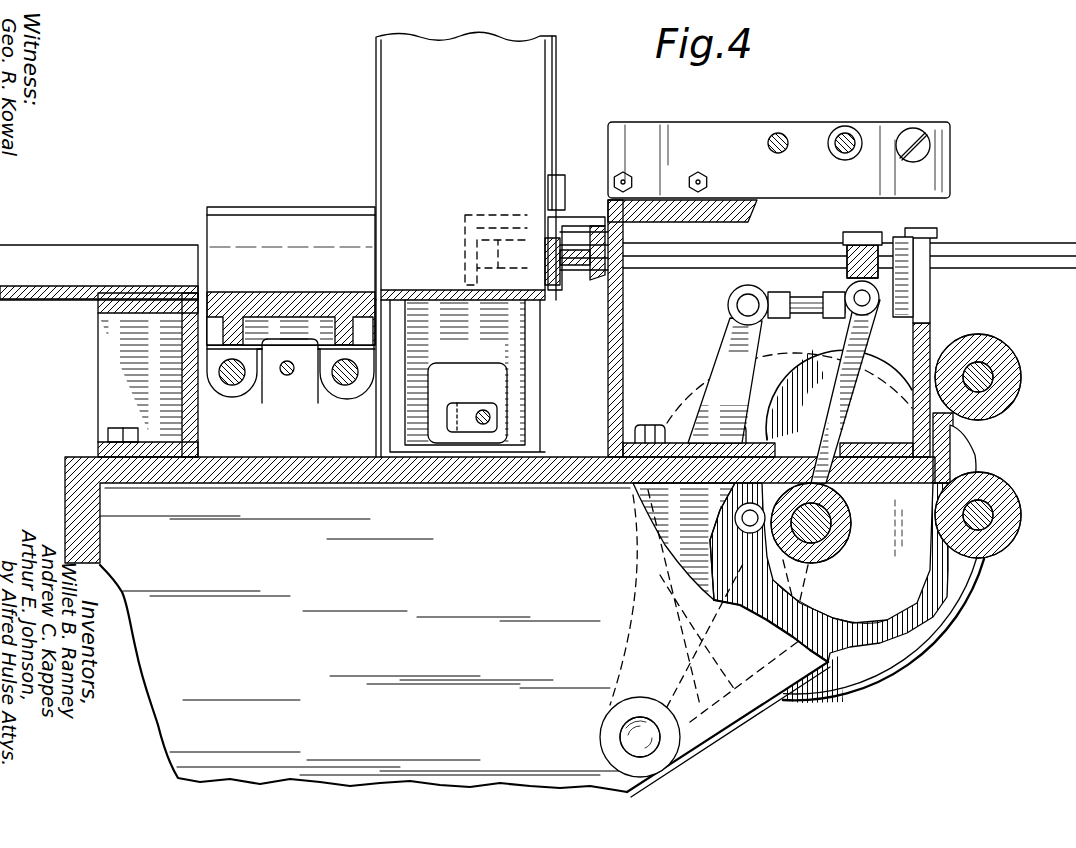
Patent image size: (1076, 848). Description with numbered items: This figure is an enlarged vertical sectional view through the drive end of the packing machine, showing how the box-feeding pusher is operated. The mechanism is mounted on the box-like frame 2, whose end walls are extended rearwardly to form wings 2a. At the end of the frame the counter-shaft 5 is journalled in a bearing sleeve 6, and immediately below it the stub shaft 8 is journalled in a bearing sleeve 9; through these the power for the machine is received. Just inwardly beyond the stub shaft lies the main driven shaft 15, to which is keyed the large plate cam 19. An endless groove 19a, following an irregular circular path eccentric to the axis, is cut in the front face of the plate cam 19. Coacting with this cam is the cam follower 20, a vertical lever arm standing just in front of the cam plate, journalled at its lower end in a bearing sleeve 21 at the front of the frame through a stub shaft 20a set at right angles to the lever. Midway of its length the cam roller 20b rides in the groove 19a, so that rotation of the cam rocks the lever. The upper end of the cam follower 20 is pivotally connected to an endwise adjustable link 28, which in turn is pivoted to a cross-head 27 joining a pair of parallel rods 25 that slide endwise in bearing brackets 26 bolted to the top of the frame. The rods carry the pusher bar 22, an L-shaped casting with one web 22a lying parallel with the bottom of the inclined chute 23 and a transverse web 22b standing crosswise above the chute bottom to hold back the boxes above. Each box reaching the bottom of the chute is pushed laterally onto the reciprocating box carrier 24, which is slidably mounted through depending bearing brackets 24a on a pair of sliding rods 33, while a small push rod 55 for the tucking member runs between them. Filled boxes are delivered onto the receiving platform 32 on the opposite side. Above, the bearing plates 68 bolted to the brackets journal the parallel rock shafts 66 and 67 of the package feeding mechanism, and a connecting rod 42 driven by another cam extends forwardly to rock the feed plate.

The frame 2 is at (338, 484).
The wings 2a is at (737, 712).
The counter-shaft 5 is at (994, 388).
The bearing sleeve 6 is at (1022, 375).
The stub shaft 8 is at (1020, 525).
The bearing sleeve 9 is at (1020, 505).
The main driven shaft 15 is at (842, 532).
The plate cam 19 is at (934, 643).
The endless groove 19a is at (853, 617).
The cam follower 20 is at (680, 504).
The stub shaft 20a is at (662, 748).
The cam roller 20b is at (736, 512).
The bearing sleeve 21 is at (600, 740).
The pusher bar 22 is at (470, 216).
The web 22a is at (553, 287).
The transverse web 22b is at (587, 238).
The inclined chute 23 is at (392, 85).
The box carrier 24 is at (303, 216).
The bearing brackets 24a is at (258, 397).
The rods 25 is at (1005, 270).
The bearing brackets 26 is at (607, 372).
The cross-head 27 is at (846, 263).
The link 28 is at (807, 313).
The receiving platform 32 is at (77, 296).
The sliding rods 33 is at (352, 398).
The connecting rod 42 is at (484, 410).
The push rod 55 is at (286, 376).
The rock shaft 66 is at (782, 133).
The rock shaft 67 is at (849, 128).
The bearing plates 68 is at (738, 123).